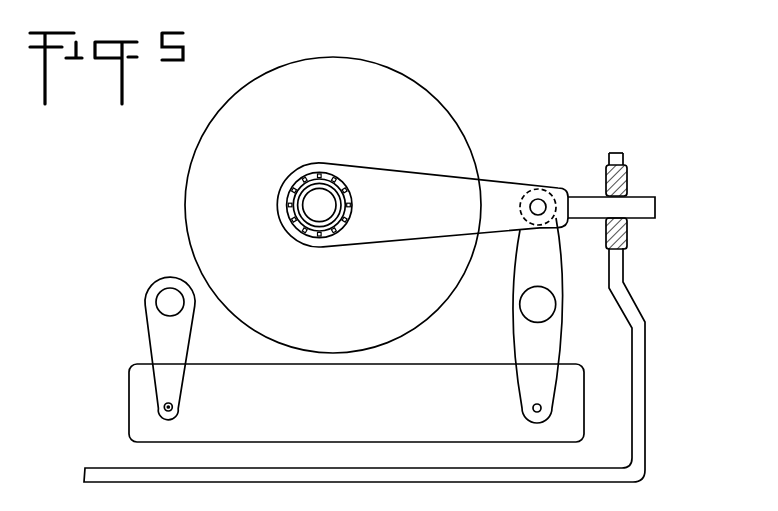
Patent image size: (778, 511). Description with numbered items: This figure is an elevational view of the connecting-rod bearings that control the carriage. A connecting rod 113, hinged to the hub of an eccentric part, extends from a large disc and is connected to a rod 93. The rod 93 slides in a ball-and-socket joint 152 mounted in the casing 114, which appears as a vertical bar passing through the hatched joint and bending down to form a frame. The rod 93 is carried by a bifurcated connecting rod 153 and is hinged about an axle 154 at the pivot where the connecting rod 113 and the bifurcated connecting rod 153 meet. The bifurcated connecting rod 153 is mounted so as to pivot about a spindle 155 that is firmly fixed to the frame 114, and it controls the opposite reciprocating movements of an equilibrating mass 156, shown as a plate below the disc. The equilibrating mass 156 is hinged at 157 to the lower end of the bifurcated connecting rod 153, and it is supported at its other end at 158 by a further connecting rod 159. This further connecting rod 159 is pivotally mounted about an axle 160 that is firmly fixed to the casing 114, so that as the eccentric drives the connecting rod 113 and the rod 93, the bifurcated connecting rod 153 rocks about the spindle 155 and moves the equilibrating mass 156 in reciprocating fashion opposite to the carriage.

The rod 93 is at (582, 197).
The connecting rod 113 is at (485, 183).
The casing 114 is at (629, 318).
The ball-and-socket joint 152 is at (624, 189).
The bifurcated connecting rod 153 is at (522, 276).
The axle 154 is at (530, 209).
The spindle 155 is at (526, 316).
The equilibrating mass 156 is at (381, 413).
The hinge point of the equilibrating mass 157 is at (533, 410).
The support point of the equilibrating mass 158 is at (174, 406).
The further connecting rod 159 is at (158, 337).
The axle 160 is at (162, 292).